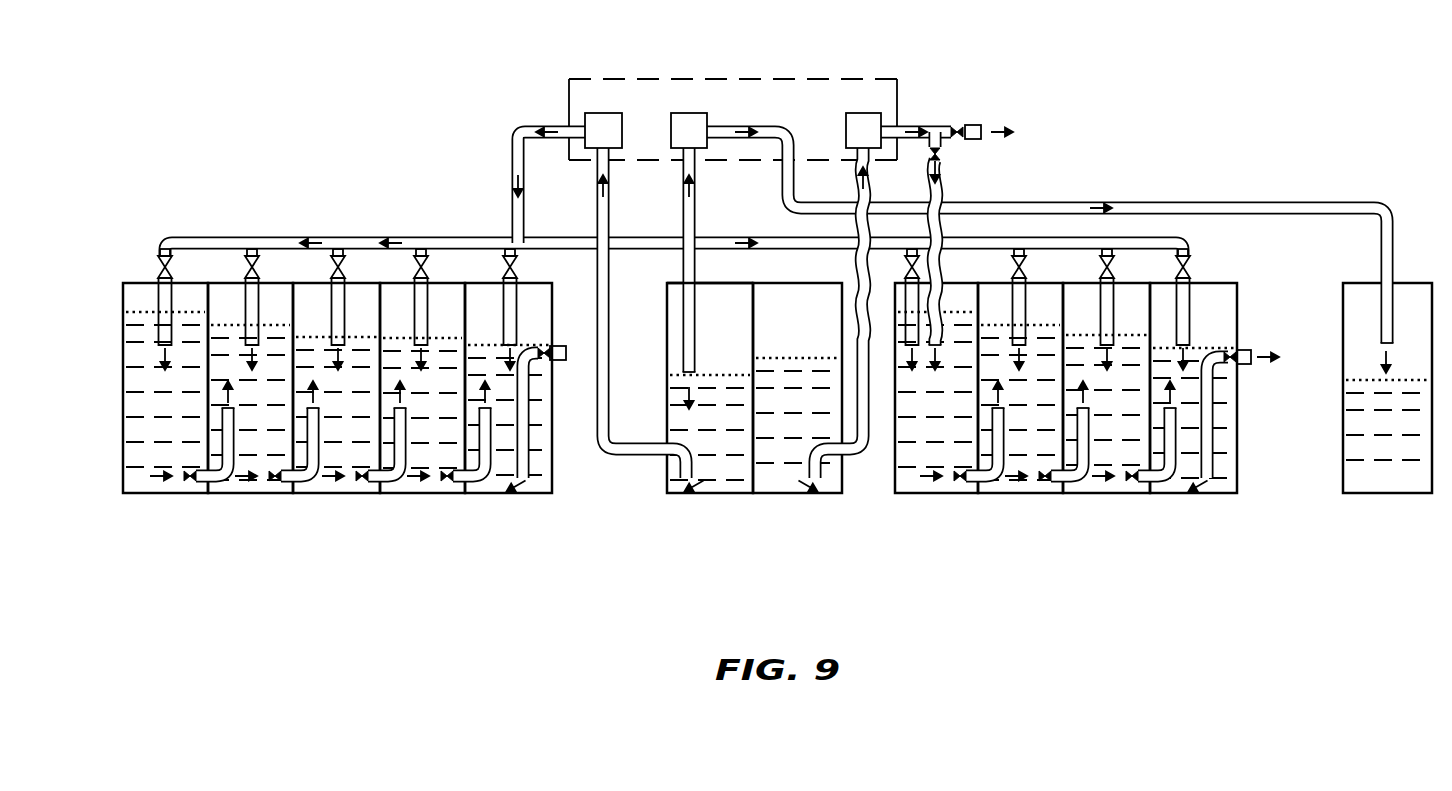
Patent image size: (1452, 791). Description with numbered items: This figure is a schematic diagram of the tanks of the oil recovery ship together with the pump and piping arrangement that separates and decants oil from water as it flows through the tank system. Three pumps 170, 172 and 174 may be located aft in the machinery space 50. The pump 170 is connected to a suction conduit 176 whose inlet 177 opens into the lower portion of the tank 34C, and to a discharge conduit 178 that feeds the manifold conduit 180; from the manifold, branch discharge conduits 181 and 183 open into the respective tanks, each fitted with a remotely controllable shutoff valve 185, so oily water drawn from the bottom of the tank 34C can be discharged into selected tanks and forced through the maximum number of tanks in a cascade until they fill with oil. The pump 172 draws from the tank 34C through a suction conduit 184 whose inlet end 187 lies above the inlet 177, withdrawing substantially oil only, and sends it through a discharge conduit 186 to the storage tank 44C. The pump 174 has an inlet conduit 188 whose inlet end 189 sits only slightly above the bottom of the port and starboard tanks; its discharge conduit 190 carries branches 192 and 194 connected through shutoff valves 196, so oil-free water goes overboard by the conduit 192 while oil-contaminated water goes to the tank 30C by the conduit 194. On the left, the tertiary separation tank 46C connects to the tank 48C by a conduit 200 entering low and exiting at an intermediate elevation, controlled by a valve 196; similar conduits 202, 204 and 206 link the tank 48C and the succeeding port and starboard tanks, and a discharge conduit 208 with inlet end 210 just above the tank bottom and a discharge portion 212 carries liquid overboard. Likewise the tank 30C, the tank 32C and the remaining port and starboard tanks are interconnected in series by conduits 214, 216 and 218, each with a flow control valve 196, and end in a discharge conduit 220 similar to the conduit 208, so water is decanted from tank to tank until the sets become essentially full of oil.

The machinery space 50 is at (568, 95).
The pump 170 is at (603, 113).
The pump 172 is at (689, 113).
The pump 174 is at (863, 113).
The suction conduit 176 is at (595, 190).
The inlet 177 is at (668, 488).
The discharge conduit 178 is at (510, 152).
The manifold conduit 180 is at (189, 237).
The branch discharge conduit 181 is at (248, 297).
The branch discharge conduit 183 is at (1168, 240).
The suction conduit 184 is at (673, 302).
The shutoff valve 185 is at (160, 262).
The discharge conduit 186 is at (1267, 202).
The inlet end 187 is at (692, 395).
The inlet conduit 188 is at (853, 310).
The inlet end 189 is at (825, 495).
The discharge conduit 190 is at (940, 125).
The branch conduit 192 is at (990, 112).
The branch conduit 194 is at (945, 300).
The shutoff valve 196 is at (960, 127).
The conduit 200 is at (217, 411).
The conduit 202 is at (283, 480).
The conduit 204 is at (401, 493).
The conduit 206 is at (488, 493).
The discharge conduit 208 is at (527, 392).
The inlet end 210 is at (528, 493).
The discharge portion 212 is at (598, 327).
The conduit 214 is at (1000, 494).
The conduit 216 is at (1084, 494).
The conduit 218 is at (1170, 494).
The discharge conduit 220 is at (1213, 452).
The tank 30C is at (893, 495).
The tank 32C is at (985, 495).
The tank 34C is at (668, 494).
The storage tank 44C is at (1381, 495).
The tertiary separation tank 46C is at (122, 458).
The tank 48C is at (214, 495).